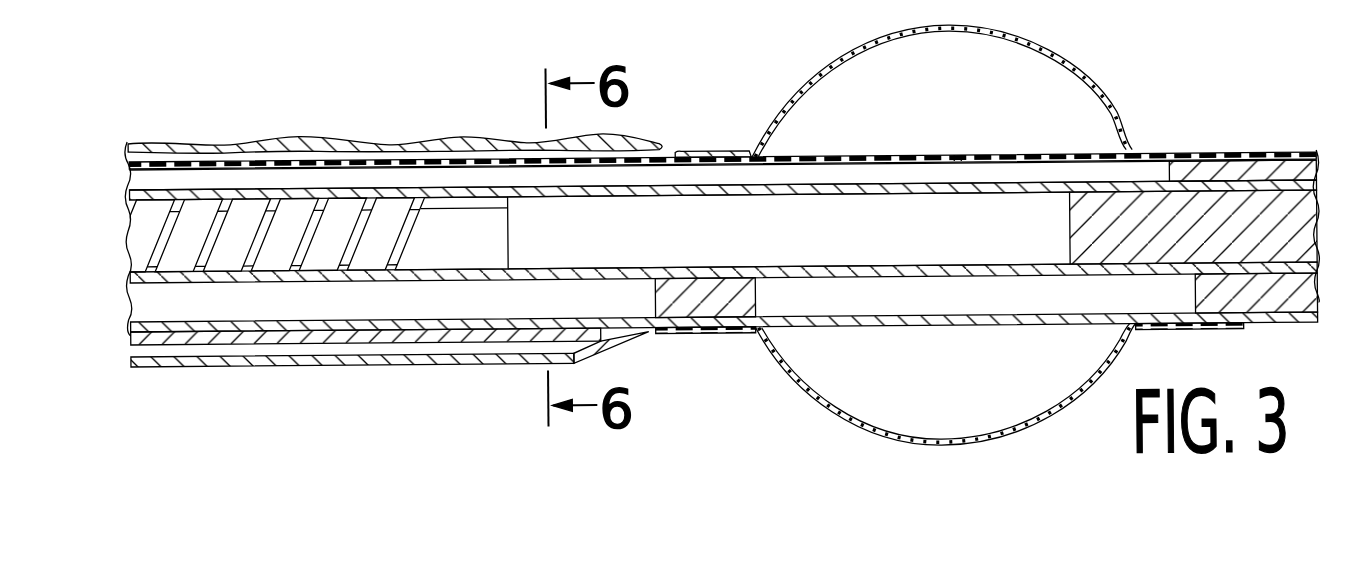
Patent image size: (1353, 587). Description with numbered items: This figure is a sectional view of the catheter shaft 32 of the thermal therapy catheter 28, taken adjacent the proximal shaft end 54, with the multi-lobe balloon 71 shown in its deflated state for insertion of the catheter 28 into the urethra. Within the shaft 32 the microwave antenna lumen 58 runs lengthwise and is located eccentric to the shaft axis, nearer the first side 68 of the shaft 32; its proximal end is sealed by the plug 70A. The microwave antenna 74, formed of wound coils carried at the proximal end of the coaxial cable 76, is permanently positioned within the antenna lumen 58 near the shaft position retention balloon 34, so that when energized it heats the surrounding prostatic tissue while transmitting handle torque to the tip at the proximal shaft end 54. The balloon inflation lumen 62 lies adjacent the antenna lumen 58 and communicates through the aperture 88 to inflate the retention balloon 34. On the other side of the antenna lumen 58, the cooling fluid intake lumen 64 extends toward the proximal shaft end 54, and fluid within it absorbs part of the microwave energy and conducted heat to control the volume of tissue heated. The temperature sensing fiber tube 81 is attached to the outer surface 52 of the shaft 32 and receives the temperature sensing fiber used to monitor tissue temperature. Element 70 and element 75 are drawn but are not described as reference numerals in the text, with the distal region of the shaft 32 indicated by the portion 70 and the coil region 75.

The catheter 28 is at (702, 345).
The catheter shaft 32 is at (432, 182).
The shaft position retention balloon 34 is at (1055, 60).
The outer surface 52 is at (1263, 332).
The proximal shaft end 54 is at (1270, 160).
The microwave antenna lumen 58 is at (750, 215).
The balloon inflation lumen 62 is at (700, 170).
The cooling fluid intake lumen 64 is at (471, 297).
The first side 68 is at (668, 157).
The distal tube segment 70 is at (1198, 176).
The plug 70A is at (1140, 210).
The multi-lobe balloon 71 is at (268, 142).
The microwave antenna 74 is at (331, 212).
The inner liner 75 is at (201, 210).
The coaxial cable 76 is at (466, 222).
The temperature sensing fiber tube 81 is at (152, 368).
The aperture 88 is at (972, 163).